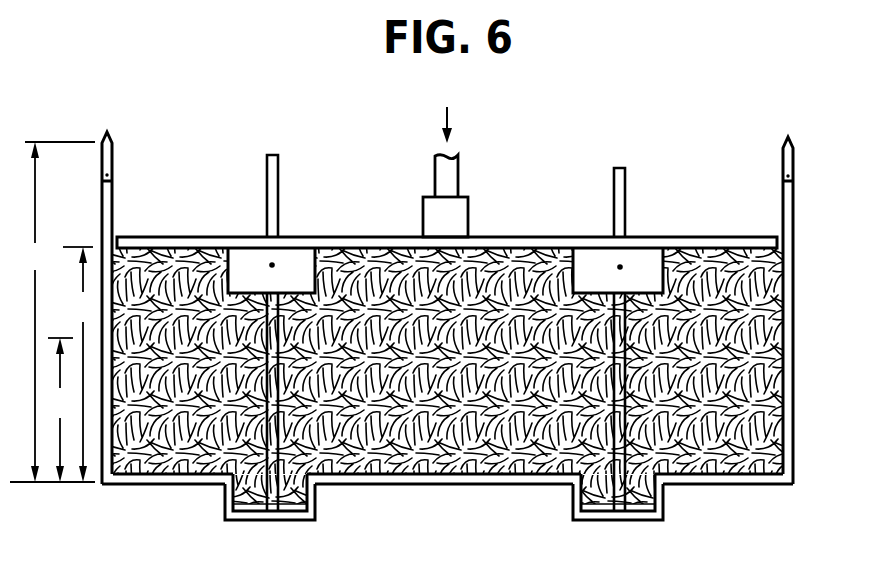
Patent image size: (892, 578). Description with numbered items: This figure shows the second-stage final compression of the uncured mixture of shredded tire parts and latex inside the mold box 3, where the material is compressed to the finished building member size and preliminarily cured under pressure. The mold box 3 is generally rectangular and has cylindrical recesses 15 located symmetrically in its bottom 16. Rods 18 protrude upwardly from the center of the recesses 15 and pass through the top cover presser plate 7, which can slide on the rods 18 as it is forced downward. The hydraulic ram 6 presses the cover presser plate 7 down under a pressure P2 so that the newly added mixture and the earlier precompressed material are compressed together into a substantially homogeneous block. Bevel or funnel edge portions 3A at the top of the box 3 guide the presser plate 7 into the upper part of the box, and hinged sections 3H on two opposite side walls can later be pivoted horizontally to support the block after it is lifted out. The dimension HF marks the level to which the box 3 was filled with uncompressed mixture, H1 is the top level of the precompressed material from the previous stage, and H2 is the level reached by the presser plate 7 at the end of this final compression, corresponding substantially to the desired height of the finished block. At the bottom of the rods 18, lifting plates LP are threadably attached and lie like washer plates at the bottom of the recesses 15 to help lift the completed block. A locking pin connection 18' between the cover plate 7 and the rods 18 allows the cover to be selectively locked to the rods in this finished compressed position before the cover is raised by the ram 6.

The mold box 3 is at (793, 204).
The bevel or funnel edge portions 3A is at (109, 141).
The hinged sections 3H is at (102, 166).
The hydraulic ram 6 is at (454, 176).
The top cover presser plate 7 is at (513, 237).
The recesses 15 is at (315, 509).
The bottom 16 is at (433, 487).
The rods 18 is at (469, 324).
The locking pin connection 18' is at (461, 239).
The lifting plates LP is at (245, 520).
The pressure P2 is at (461, 117).
The height HF is at (52, 312).
The height H1 is at (60, 410).
The height H2 is at (79, 364).